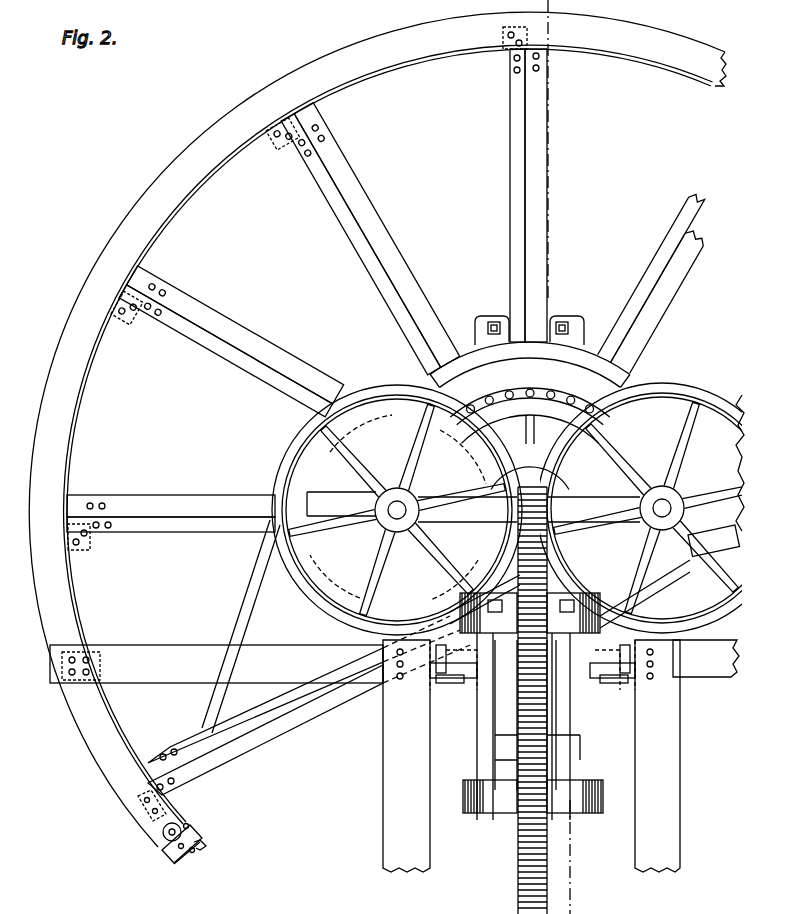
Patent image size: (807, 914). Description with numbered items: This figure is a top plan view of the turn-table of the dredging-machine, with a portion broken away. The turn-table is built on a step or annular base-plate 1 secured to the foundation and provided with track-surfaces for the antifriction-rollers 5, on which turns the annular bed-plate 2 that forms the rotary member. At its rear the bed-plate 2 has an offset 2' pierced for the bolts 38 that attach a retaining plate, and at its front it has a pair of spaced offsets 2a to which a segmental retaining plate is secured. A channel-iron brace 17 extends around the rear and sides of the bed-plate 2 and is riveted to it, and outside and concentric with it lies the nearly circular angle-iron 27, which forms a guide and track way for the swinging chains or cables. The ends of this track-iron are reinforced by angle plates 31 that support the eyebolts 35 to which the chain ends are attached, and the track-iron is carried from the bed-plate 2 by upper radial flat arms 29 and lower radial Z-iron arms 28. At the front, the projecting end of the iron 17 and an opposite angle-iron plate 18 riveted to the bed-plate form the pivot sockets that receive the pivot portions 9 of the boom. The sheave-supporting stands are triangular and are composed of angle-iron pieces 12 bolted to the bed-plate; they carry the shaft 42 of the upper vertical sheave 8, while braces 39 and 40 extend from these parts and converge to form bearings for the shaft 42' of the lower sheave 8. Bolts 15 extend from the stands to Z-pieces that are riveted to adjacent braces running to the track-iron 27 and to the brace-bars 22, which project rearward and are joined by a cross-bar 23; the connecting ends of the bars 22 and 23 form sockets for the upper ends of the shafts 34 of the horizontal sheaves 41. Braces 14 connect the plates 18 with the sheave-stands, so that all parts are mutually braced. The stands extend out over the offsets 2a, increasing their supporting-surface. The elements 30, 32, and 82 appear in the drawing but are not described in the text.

The step or annular base-plate 1 is at (535, 475).
The annular bed-plate 2 is at (531, 531).
The offset 2' is at (508, 457).
The spaced offsets 2a is at (531, 713).
The vertical antifriction-rollers 5 is at (590, 408).
The vertical sheave 8 is at (530, 603).
The pivot portions of the boom 9 is at (531, 756).
The angle-iron pieces 12 is at (482, 692).
The braces 14 is at (470, 680).
The bolts 15 is at (440, 675).
The channel-iron brace 17 is at (742, 540).
The angle-iron plate 18 is at (440, 665).
The brace-bars 22 is at (400, 612).
The cross-bar 23 is at (529, 511).
The angle-iron track 27 is at (377, 429).
The lower radial arms 28 is at (352, 270).
The upper radial arms 29 is at (368, 214).
The beam 30 is at (760, 652).
The angle plates 31 is at (182, 854).
The strut 32 is at (252, 608).
The shafts of the horizontal sheaves 34 is at (755, 506).
The eyebolts 35 is at (162, 834).
The bolts 38 is at (537, 308).
The brace 39 is at (575, 750).
The brace 40 is at (478, 752).
The horizontal sheaves 41 is at (290, 436).
The shaft of the upper vertical sheave 42 is at (555, 700).
The shaft of the lower sheave 42' is at (556, 796).
The block 82 is at (440, 682).